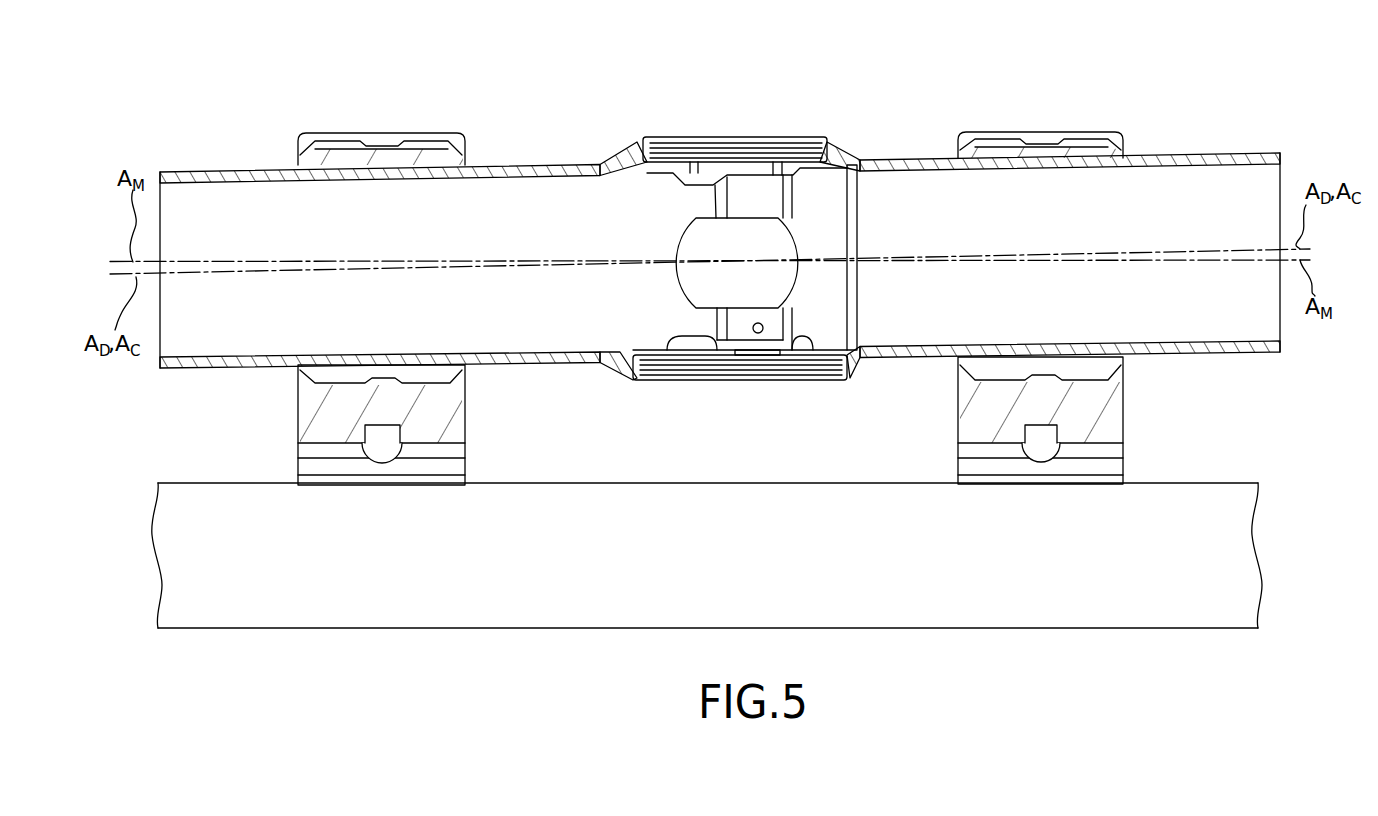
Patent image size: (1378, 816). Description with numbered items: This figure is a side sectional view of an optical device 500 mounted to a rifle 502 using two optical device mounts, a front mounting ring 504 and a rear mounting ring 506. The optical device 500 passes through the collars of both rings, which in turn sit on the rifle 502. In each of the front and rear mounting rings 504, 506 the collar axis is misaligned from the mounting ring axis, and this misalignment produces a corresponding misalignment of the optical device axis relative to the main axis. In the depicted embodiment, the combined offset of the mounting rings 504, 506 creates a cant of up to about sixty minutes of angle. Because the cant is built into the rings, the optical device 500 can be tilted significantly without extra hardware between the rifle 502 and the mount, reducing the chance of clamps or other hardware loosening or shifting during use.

The optical device 500 is at (1188, 185).
The rifle 502 is at (957, 607).
The front mounting ring 504 is at (1043, 133).
The rear mounting ring 506 is at (452, 133).